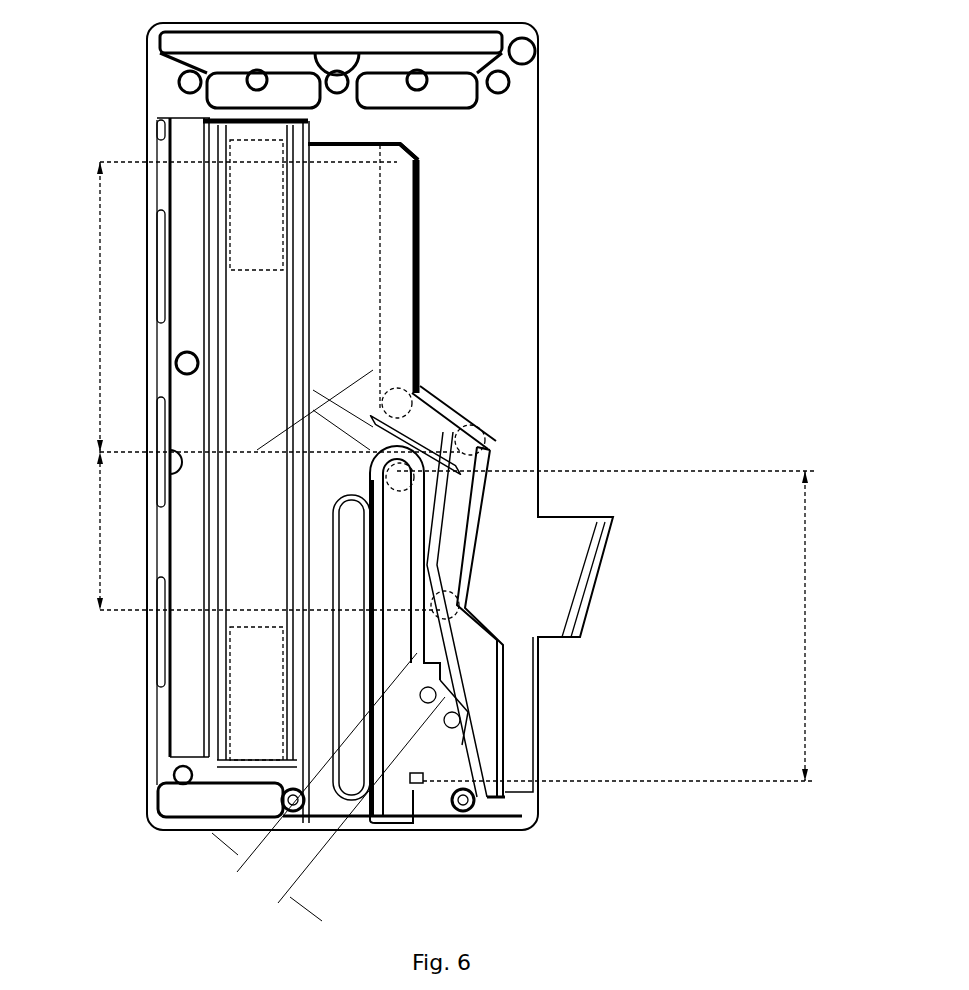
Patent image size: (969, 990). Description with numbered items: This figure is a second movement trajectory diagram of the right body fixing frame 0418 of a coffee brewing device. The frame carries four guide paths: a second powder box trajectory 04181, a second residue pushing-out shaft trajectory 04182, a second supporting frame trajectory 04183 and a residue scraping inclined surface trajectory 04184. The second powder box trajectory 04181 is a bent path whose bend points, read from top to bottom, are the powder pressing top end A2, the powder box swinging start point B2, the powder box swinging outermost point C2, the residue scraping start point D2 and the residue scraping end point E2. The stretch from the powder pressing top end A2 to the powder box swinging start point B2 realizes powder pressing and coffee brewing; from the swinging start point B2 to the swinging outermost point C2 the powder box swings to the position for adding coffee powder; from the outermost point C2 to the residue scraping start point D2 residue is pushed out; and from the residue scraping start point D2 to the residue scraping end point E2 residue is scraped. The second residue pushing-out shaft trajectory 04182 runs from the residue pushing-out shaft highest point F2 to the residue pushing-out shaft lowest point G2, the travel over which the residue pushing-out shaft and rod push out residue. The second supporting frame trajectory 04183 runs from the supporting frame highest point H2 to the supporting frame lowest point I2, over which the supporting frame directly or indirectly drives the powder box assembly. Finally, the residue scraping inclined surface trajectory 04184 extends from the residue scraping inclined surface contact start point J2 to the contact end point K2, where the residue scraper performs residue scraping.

The right body fixing frame 0418 is at (473, 253).
The second powder box trajectory 04181 is at (397, 310).
The second residue pushing-out shaft trajectory 04182 is at (400, 567).
The second supporting frame trajectory 04183 is at (395, 358).
The residue scraping inclined surface trajectory 04184 is at (605, 597).
The powder pressing top end A2 is at (400, 150).
The powder box swinging start point B2 is at (405, 395).
The powder box swinging outermost point C2 is at (453, 428).
The residue scraping start point D2 is at (445, 600).
The residue scraping end point E2 is at (460, 672).
The residue pushing-out shaft highest point F2 is at (460, 495).
The residue pushing-out shaft lowest point G2 is at (475, 762).
The supporting frame highest point H2 is at (253, 203).
The supporting frame lowest point I2 is at (470, 707).
The residue scraping inclined surface contact start point J2 is at (613, 522).
The residue scraping inclined surface contact end point K2 is at (590, 625).